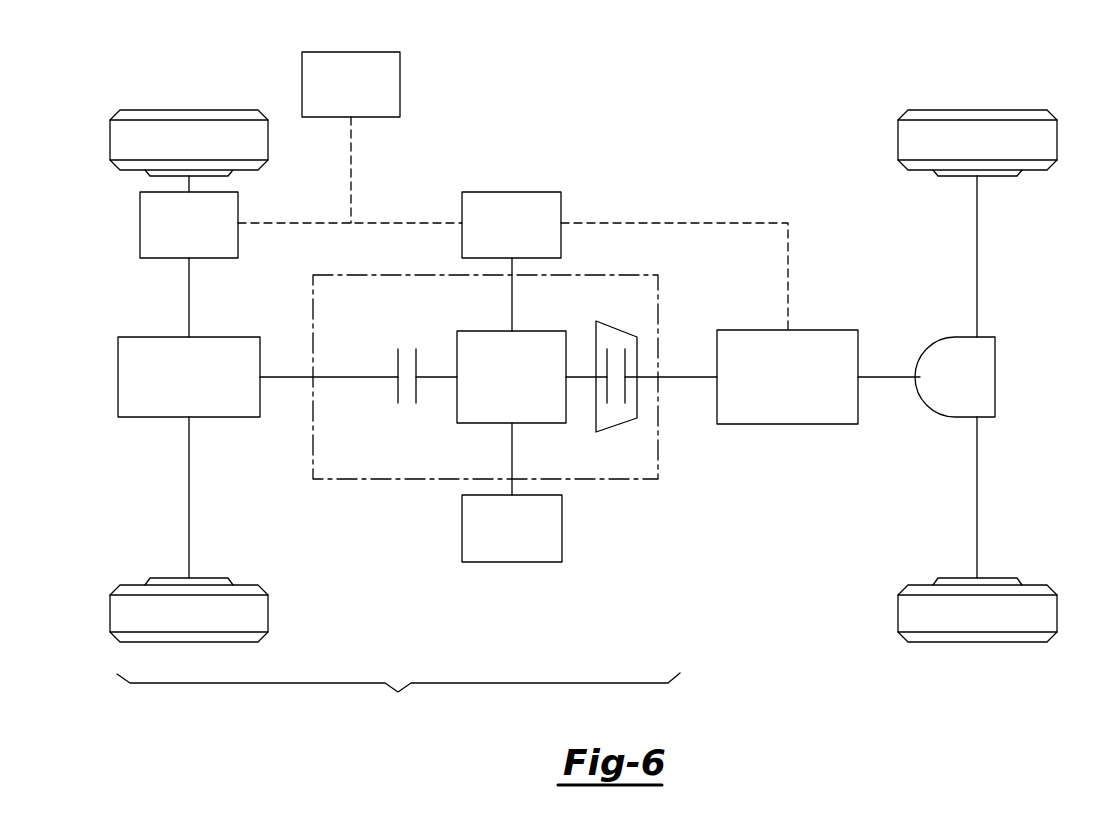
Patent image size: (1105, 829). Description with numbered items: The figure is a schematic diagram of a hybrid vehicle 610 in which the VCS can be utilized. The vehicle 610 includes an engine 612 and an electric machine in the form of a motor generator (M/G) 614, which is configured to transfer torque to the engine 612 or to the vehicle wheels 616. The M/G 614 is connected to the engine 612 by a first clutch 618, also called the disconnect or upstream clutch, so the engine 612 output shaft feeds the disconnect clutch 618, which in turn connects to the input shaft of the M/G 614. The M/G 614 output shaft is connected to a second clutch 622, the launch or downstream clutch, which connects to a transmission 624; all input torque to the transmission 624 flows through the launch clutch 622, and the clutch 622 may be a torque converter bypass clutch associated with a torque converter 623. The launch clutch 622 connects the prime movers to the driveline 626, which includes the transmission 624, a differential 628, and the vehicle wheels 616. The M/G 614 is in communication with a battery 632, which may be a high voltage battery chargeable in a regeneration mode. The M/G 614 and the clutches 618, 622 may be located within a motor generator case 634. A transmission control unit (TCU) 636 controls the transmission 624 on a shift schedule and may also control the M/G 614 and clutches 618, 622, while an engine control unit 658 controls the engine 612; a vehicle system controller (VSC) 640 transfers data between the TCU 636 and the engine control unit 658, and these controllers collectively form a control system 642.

The hybrid vehicle 610 is at (786, 131).
The engine 612 is at (118, 377).
The motor generator (M/G) 614 is at (500, 331).
The vehicle wheels 616 is at (977, 110).
The first clutch (disconnect clutch) 618 is at (398, 390).
The second clutch (launch clutch) 622 is at (625, 397).
The torque converter 623 is at (617, 324).
The transmission 624 is at (815, 330).
The driveline 626 is at (398, 696).
The differential 628 is at (995, 377).
The battery 632 is at (512, 562).
The motor generator case 634 is at (627, 480).
The transmission control unit (TCU) 636 is at (515, 192).
The vehicle system controller (VSC) 640 is at (351, 52).
The control system 642 is at (452, 146).
The engine control unit (ECU) 658 is at (140, 223).